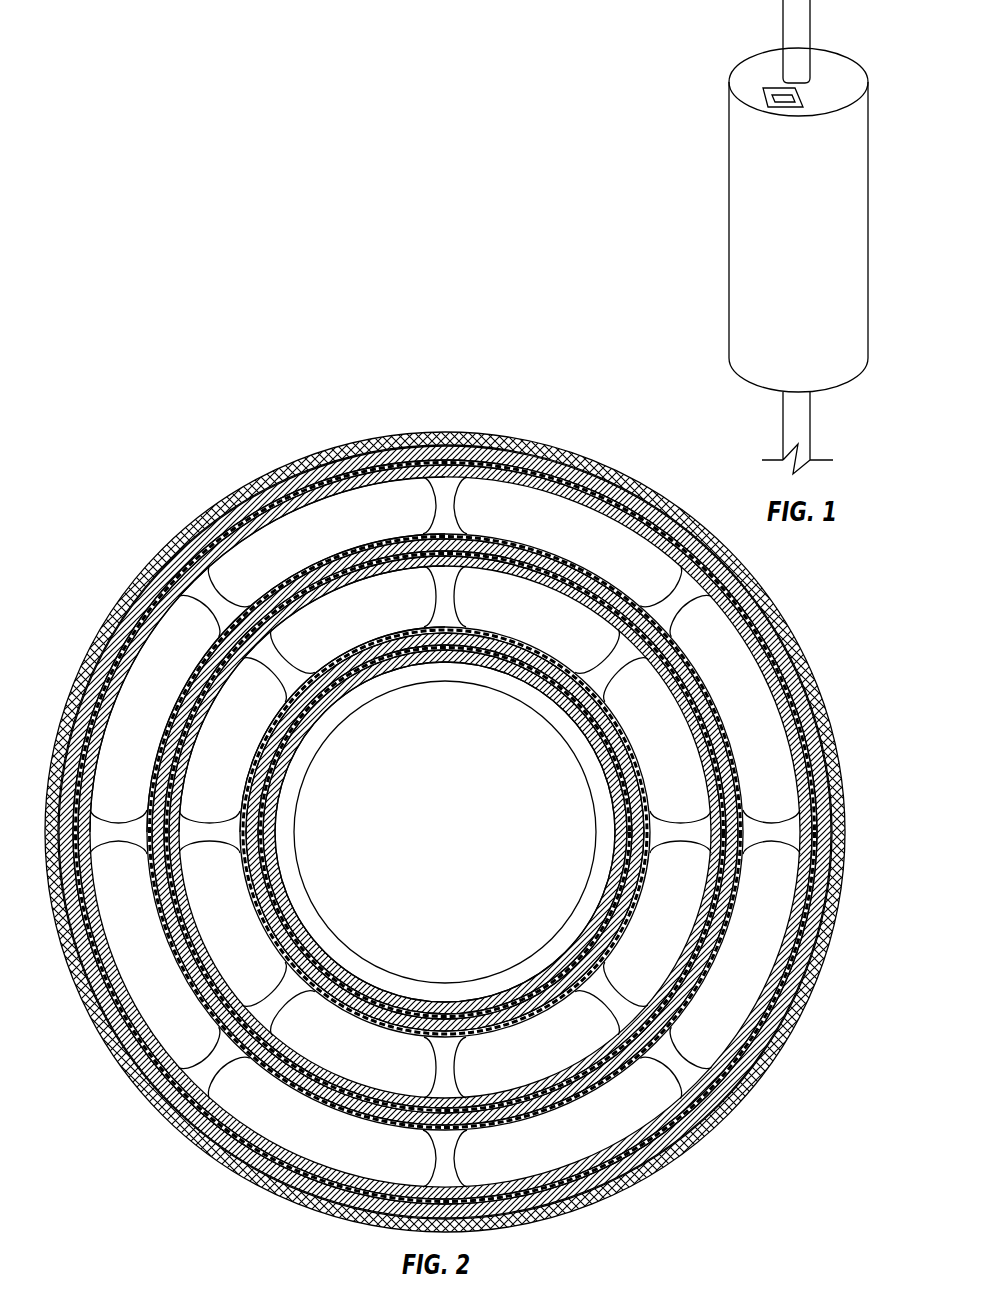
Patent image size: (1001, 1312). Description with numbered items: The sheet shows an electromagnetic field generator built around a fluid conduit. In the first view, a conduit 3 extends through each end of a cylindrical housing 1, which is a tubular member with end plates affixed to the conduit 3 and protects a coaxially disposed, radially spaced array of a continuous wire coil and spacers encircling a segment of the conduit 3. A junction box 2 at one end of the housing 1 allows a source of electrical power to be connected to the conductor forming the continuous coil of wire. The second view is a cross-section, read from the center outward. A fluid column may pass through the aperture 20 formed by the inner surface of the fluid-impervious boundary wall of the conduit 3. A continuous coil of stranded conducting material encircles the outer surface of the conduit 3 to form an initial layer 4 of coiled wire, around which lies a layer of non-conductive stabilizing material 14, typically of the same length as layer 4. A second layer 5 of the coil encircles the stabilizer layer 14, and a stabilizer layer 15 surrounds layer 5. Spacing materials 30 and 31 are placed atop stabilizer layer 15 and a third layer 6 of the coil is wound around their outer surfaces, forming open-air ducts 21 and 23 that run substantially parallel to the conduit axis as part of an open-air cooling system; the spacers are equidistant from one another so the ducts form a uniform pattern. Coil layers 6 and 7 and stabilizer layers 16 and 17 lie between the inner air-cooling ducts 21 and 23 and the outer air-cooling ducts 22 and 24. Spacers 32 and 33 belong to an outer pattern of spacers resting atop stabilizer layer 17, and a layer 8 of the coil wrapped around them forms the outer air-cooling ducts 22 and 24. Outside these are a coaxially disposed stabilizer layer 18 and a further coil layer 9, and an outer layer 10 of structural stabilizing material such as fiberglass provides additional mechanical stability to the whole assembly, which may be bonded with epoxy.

In FIG. 1, the cylindrical housing 1 is at (745, 210).
In FIG. 1, the junction box 2 is at (765, 92).
In FIG. 1, the conduit 3 is at (797, 33).
In FIG. 2, the conduit 3 is at (540, 702).
In FIG. 2, the initial layer of coiled wire 4 is at (607, 717).
In FIG. 2, the second layer of the continuous coil of wire 5 is at (632, 770).
In FIG. 2, the third layer of the continuous wire coil 6 is at (690, 669).
In FIG. 2, the layer of the continuous wire coil 7 is at (717, 720).
In FIG. 2, the layer of the continuous wire coil 8 is at (772, 622).
In FIG. 2, the layer of the continuous wire coil 9 is at (790, 677).
In FIG. 2, the outer layer of structural stabilizing material 10 is at (812, 695).
In FIG. 2, the non-conductive stabilizing material layer 14 is at (622, 740).
In FIG. 2, the non-conductive stabilizing material layer 15 is at (643, 795).
In FIG. 2, the stabilizer layer 16 is at (707, 695).
In FIG. 2, the stabilizer layer 17 is at (727, 748).
In FIG. 2, the stabilizer layer 18 is at (775, 650).
In FIG. 2, the aperture 20 is at (429, 849).
In FIG. 2, the open-air duct 21 is at (334, 639).
In FIG. 2, the outer air-cooling duct 22 is at (306, 554).
In FIG. 2, the open-air duct 23 is at (219, 757).
In FIG. 2, the outer air-cooling duct 24 is at (131, 726).
In FIG. 2, the spacing material 30 is at (455, 617).
In FIG. 2, the spacing material 31 is at (280, 670).
In FIG. 2, the spacer 32 is at (448, 525).
In FIG. 2, the spacer 33 is at (213, 608).